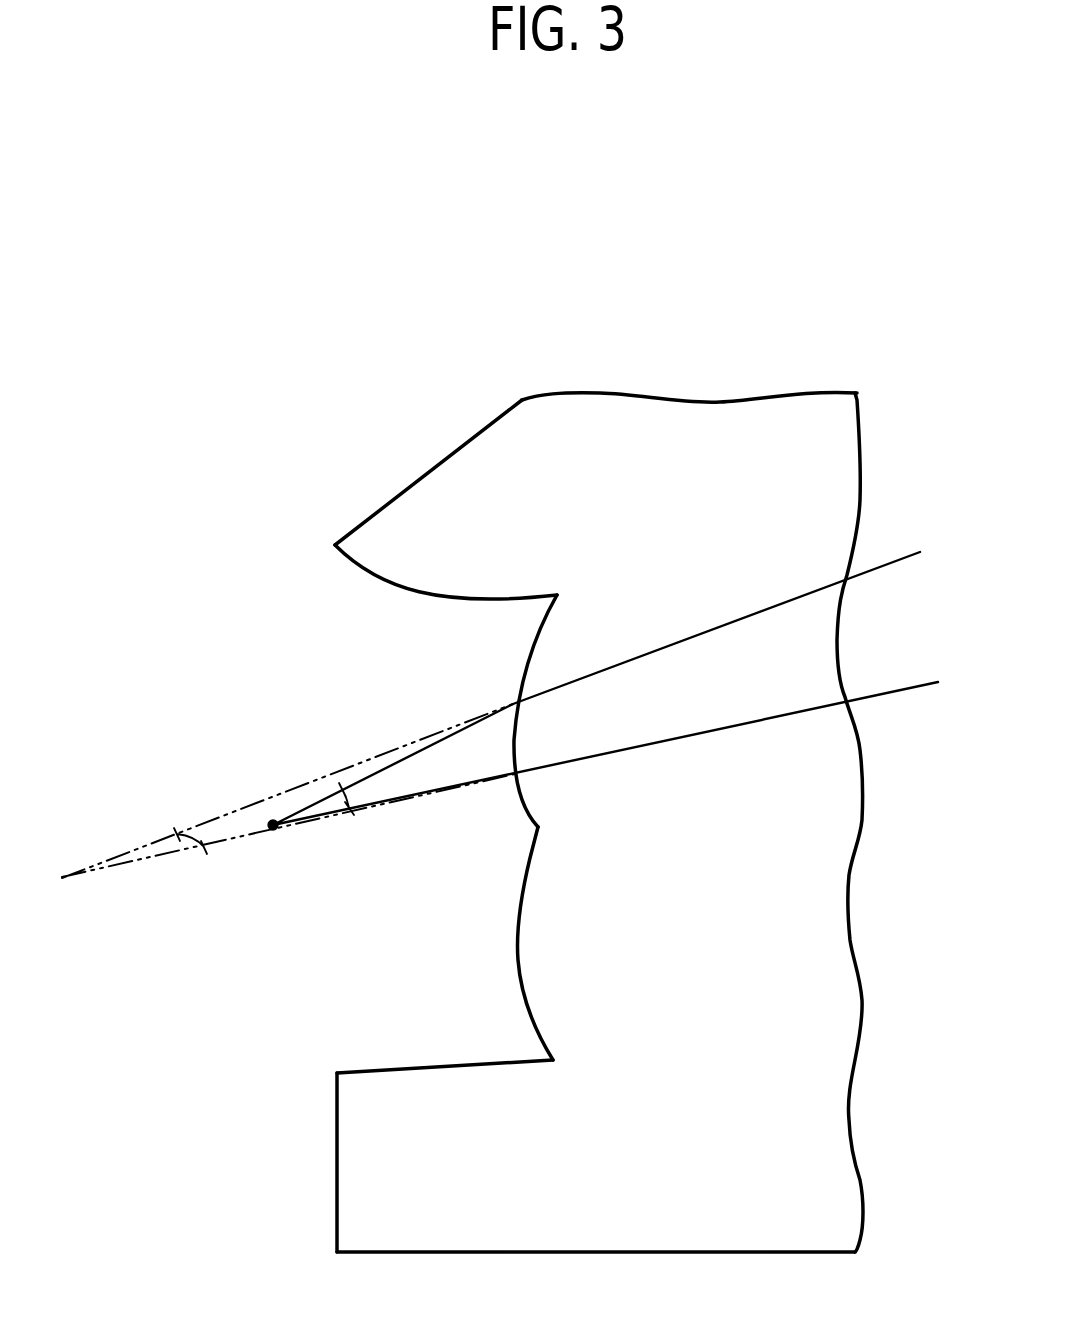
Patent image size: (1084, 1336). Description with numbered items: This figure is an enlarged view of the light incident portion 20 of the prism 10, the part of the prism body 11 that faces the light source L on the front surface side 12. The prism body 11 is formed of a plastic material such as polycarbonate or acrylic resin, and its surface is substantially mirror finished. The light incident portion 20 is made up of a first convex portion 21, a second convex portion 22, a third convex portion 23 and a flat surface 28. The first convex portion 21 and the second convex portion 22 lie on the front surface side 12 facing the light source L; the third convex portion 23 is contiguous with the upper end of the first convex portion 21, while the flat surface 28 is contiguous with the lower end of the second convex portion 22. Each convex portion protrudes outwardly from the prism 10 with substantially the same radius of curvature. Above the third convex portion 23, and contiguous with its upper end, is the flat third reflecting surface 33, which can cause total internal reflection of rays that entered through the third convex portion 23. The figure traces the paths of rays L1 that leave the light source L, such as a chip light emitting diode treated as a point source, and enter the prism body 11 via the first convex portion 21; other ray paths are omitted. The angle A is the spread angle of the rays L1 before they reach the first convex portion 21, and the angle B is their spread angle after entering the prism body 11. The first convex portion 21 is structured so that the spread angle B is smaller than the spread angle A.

The prism 10 is at (724, 345).
The prism body 11 is at (818, 477).
The front surface side 12 is at (173, 701).
The light incident portion 20 is at (312, 989).
The first convex portion 21 is at (522, 660).
The second convex portion 22 is at (517, 958).
The third convex portion 23 is at (410, 590).
The flat surface 28 is at (455, 1065).
The third reflecting surface 33 is at (437, 465).
The light source L is at (273, 820).
The rays L1 is at (722, 622).
The angle A is at (352, 797).
The angle B is at (204, 848).